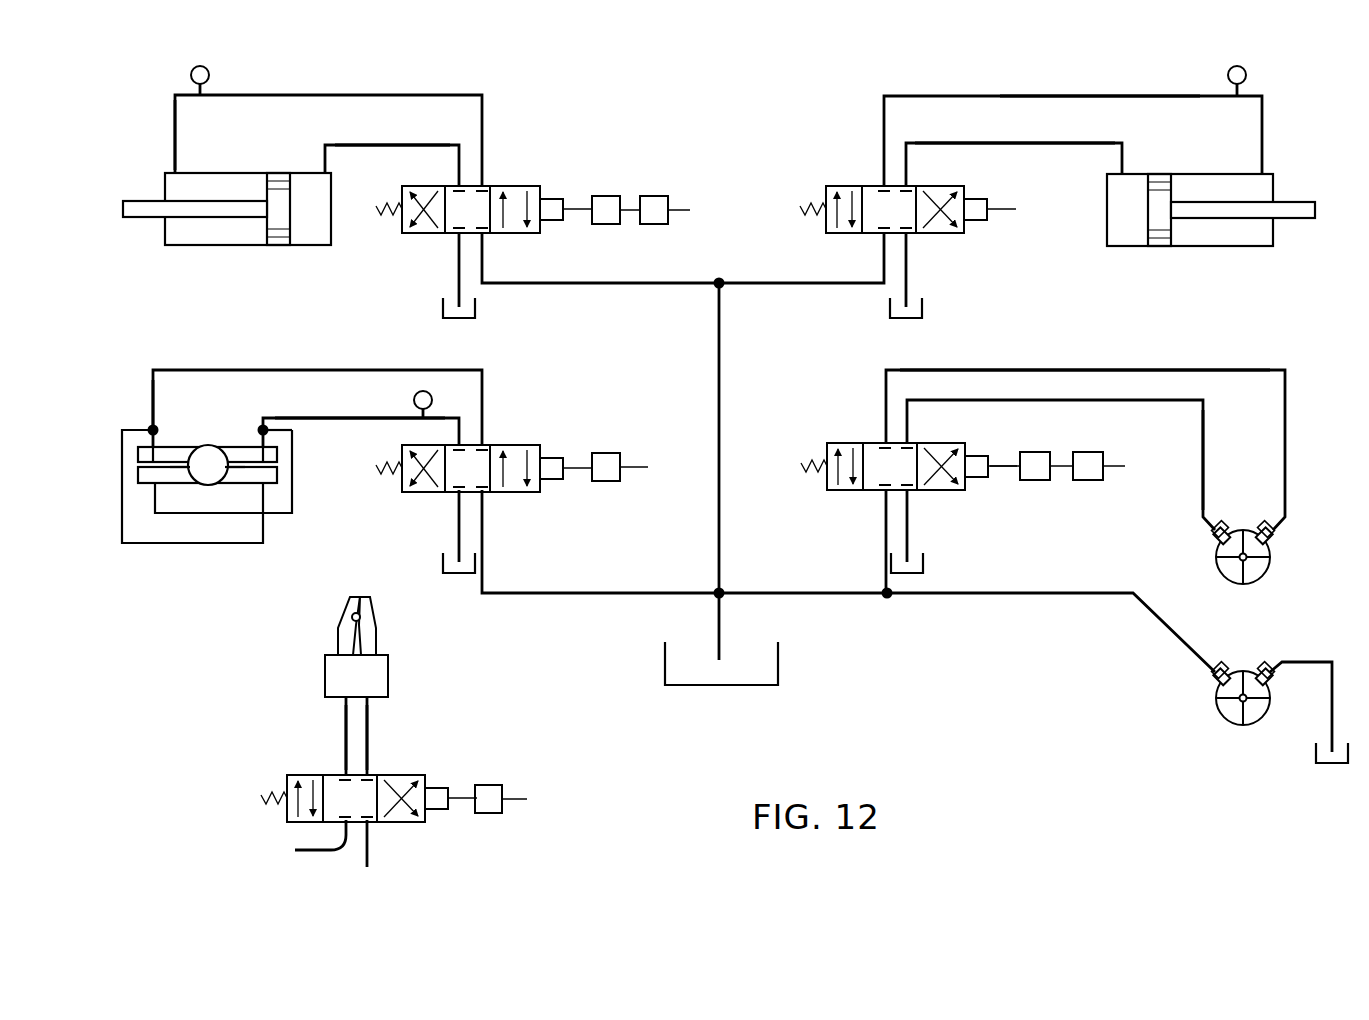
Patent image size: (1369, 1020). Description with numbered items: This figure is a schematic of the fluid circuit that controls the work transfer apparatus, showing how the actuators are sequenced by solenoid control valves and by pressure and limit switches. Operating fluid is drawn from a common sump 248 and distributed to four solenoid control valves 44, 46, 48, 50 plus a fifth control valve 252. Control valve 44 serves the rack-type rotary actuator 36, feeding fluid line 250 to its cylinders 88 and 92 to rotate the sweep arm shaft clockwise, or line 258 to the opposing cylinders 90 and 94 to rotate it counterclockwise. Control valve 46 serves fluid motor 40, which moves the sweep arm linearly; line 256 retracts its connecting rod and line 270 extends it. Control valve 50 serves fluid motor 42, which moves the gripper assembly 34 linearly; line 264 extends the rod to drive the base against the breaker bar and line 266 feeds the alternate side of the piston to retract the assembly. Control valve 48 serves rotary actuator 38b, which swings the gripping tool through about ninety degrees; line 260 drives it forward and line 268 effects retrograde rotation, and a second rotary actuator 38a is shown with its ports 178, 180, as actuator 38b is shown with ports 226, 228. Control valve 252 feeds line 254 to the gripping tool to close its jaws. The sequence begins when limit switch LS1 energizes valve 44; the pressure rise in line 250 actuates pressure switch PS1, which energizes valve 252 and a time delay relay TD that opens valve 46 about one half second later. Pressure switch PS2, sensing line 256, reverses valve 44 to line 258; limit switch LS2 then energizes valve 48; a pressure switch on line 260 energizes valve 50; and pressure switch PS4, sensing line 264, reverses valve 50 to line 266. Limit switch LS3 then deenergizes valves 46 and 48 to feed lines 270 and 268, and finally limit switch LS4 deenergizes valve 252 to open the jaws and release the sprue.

The gripper assembly 34 is at (391, 670).
The rotary actuator 36 is at (207, 461).
The rotary actuator 38a is at (1211, 701).
The rotary actuator 38b is at (1241, 567).
The fluid motor 40 is at (240, 249).
The fluid motor 42 is at (1212, 250).
The control valve 44 is at (510, 492).
The control valve 46 is at (425, 236).
The control valve 48 is at (938, 490).
The control valve 50 is at (930, 236).
The cylinder 88 is at (248, 446).
The cylinder 90 is at (172, 446).
The cylinder 92 is at (196, 487).
The cylinder 94 is at (224, 487).
The motor port 178 is at (1212, 680).
The motor port 180 is at (1263, 670).
The motor port 226 is at (1212, 540).
The motor port 228 is at (1275, 540).
The sump 248 is at (779, 665).
The fluid line 250 is at (348, 417).
The control valve 252 is at (395, 822).
The line 254 is at (369, 742).
The line 256 is at (175, 150).
The line 258 is at (153, 382).
The line 260 is at (1205, 455).
The line 264 is at (982, 143).
The line 266 is at (1168, 100).
The line 268 is at (1033, 370).
The line 270 is at (325, 158).
The pressure switch PS1 is at (414, 403).
The pressure switch PS2 is at (206, 70).
The pressure switch PS4 is at (1242, 68).
The limit switch LS1 is at (608, 482).
The limit switch LS2 is at (1036, 452).
The limit switch LS3 is at (600, 195).
The limit switch LS4 is at (490, 785).
The time delay relay TD is at (657, 225).